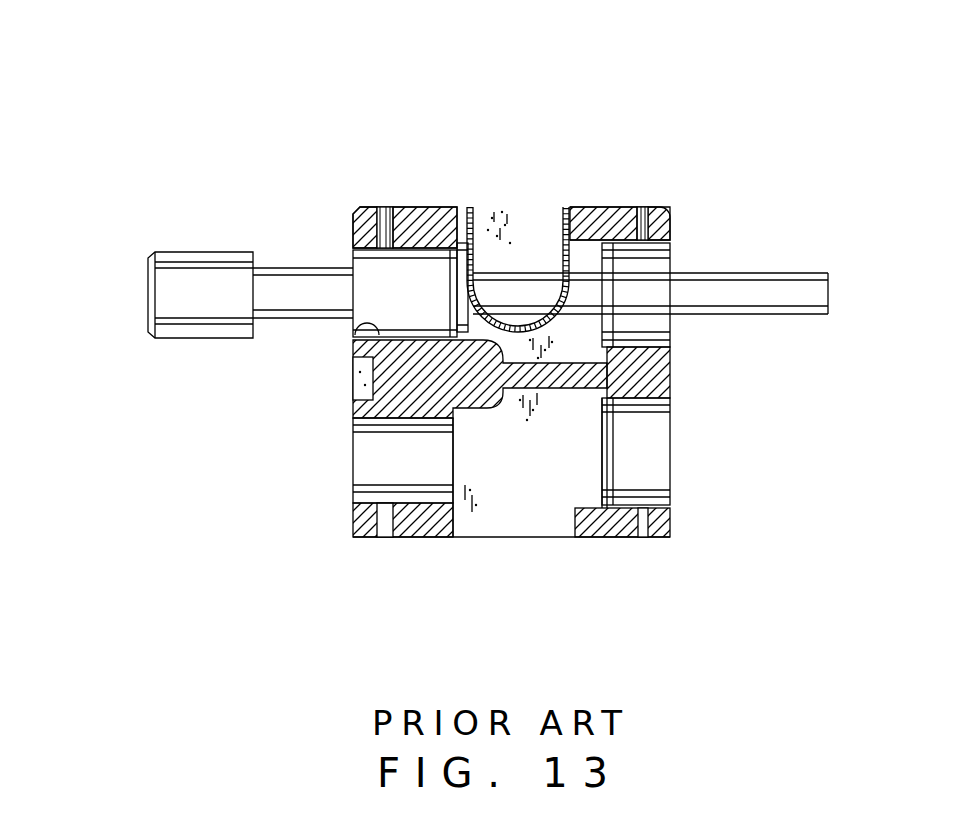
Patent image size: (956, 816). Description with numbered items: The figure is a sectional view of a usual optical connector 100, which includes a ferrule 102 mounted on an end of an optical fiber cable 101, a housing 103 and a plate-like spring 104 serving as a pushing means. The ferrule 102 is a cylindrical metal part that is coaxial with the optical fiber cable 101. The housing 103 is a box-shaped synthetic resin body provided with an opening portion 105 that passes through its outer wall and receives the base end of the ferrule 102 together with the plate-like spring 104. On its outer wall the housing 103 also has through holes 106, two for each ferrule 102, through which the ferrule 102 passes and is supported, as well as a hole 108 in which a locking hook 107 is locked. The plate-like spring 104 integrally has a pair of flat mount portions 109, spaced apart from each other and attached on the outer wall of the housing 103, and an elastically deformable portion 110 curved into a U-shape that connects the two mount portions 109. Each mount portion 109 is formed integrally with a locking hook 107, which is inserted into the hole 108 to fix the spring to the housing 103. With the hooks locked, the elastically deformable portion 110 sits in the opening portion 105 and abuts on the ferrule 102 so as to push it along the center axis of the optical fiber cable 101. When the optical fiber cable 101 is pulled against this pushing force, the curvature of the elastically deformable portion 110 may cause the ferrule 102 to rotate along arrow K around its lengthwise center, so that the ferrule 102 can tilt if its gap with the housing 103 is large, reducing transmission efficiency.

The optical connector 100 is at (586, 130).
The optical fiber cable 101 is at (722, 272).
The ferrule 102 is at (296, 256).
The housing 103 is at (590, 546).
The plate-like spring 104 is at (545, 207).
The opening portion 105 is at (500, 210).
The through holes 106 is at (352, 320).
The locking hook 107 is at (367, 207).
The hole 108 is at (412, 207).
The mount portions 109 is at (430, 207).
The elastically deformable portion 110 is at (533, 268).
The arrow K is at (108, 237).